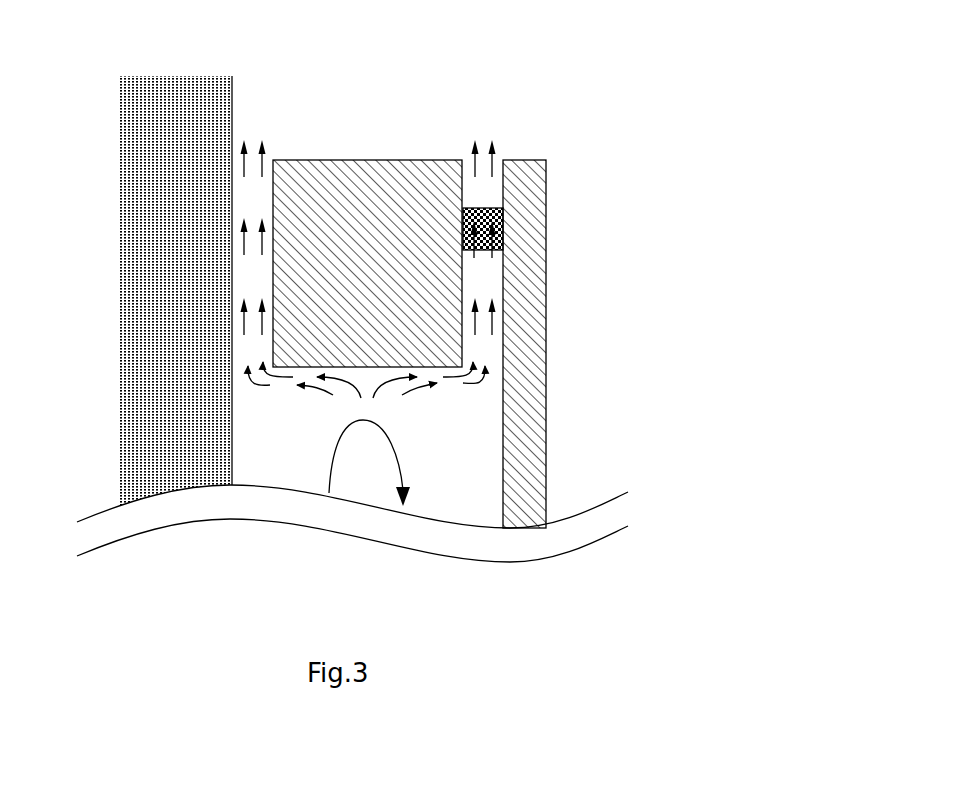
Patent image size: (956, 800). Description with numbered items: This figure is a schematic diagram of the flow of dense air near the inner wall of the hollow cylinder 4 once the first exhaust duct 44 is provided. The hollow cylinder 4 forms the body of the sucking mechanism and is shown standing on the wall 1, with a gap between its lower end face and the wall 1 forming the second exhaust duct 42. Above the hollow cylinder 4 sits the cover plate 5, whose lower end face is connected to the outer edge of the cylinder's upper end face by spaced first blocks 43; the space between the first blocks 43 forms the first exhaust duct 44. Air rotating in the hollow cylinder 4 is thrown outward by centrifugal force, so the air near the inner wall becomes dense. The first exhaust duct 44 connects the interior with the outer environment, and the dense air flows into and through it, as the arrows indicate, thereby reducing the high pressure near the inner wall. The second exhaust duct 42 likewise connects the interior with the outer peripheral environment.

The wall 1 is at (157, 318).
The hollow cylinder 4 is at (392, 208).
The cover plate 5 is at (527, 237).
The second exhaust duct 42 is at (255, 248).
The first blocks 43 is at (498, 214).
The first exhaust duct 44 is at (486, 277).